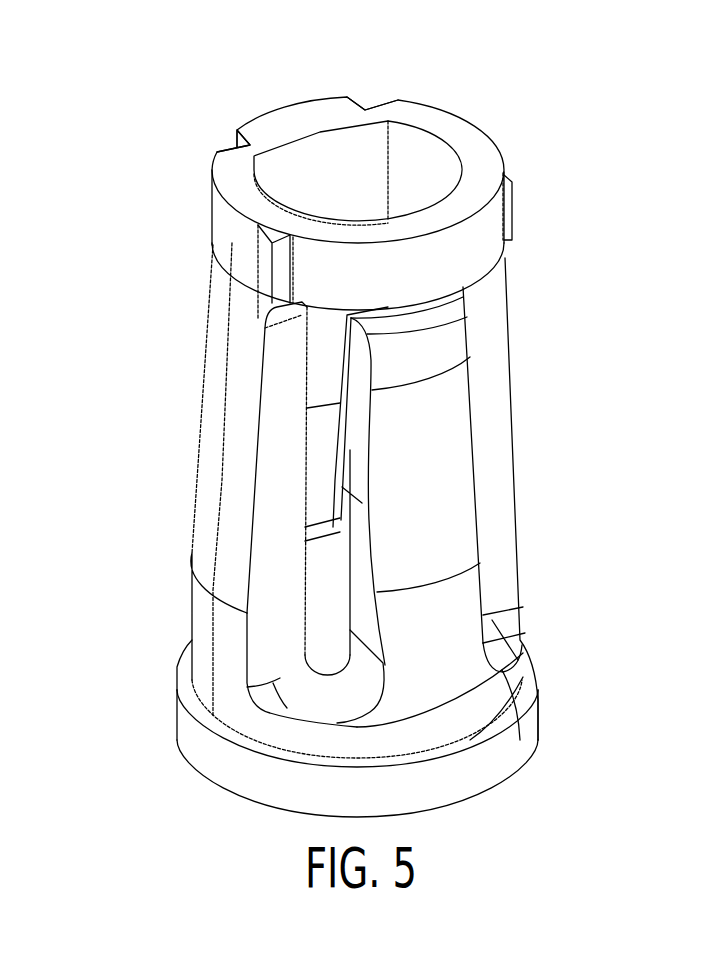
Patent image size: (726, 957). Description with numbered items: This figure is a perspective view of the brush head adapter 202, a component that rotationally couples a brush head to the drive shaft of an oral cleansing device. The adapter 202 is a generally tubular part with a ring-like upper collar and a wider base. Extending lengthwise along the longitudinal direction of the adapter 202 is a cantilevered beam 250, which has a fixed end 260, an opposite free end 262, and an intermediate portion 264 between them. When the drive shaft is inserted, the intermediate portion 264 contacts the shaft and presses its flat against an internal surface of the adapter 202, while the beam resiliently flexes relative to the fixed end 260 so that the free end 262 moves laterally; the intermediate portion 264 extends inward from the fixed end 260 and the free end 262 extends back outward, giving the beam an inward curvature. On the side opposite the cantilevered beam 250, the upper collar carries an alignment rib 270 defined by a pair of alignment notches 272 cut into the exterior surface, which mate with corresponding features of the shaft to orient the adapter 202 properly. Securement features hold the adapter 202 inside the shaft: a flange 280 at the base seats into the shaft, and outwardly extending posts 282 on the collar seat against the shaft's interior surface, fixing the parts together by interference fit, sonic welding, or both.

The adapter 202 is at (345, 425).
The alignment rib 270 is at (287, 107).
The alignment notches 272 is at (214, 131).
The outwardly extending posts 282 is at (513, 205).
The cantilevered beam 250 is at (445, 475).
The free end 262 is at (445, 347).
The intermediate portion 264 is at (450, 522).
The fixed end 260 is at (452, 652).
The flange 280 is at (187, 690).